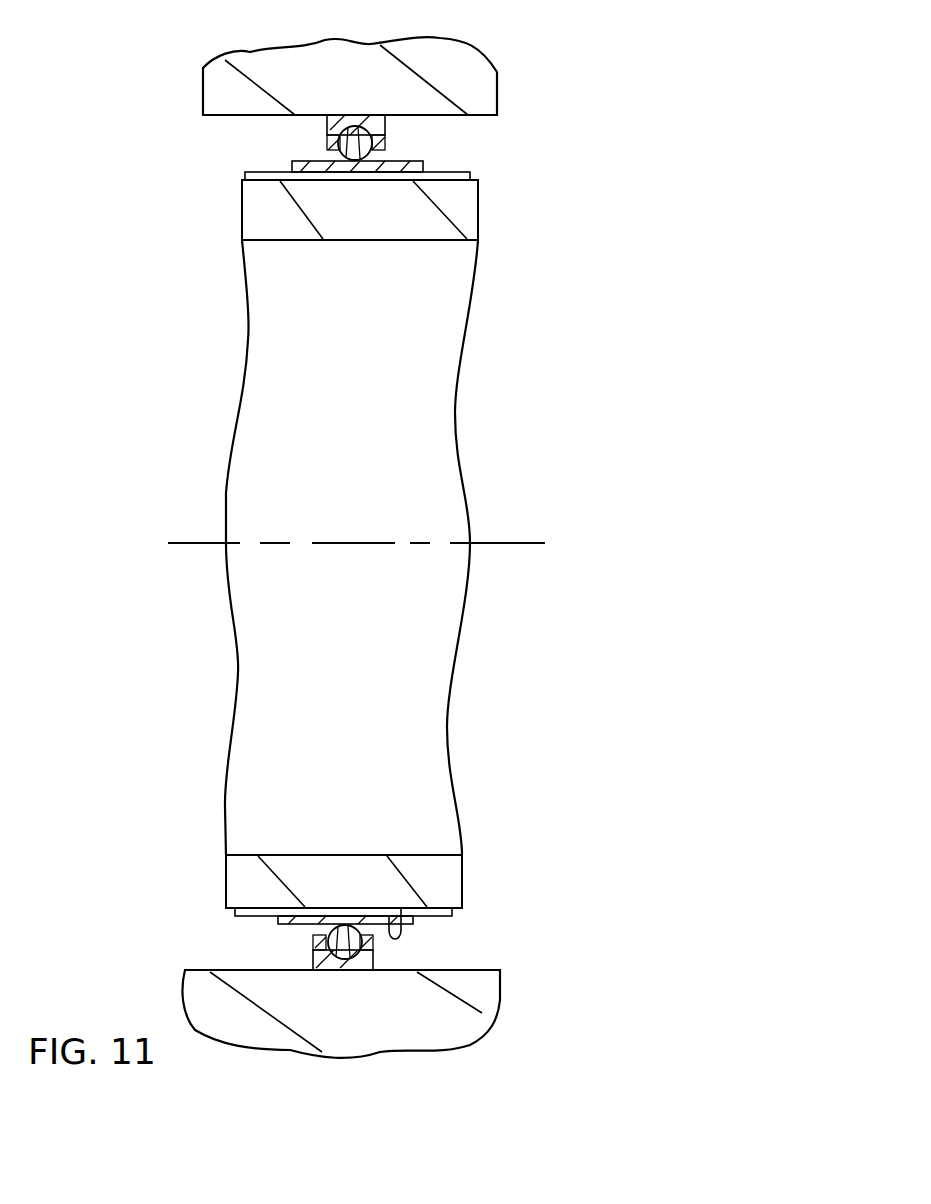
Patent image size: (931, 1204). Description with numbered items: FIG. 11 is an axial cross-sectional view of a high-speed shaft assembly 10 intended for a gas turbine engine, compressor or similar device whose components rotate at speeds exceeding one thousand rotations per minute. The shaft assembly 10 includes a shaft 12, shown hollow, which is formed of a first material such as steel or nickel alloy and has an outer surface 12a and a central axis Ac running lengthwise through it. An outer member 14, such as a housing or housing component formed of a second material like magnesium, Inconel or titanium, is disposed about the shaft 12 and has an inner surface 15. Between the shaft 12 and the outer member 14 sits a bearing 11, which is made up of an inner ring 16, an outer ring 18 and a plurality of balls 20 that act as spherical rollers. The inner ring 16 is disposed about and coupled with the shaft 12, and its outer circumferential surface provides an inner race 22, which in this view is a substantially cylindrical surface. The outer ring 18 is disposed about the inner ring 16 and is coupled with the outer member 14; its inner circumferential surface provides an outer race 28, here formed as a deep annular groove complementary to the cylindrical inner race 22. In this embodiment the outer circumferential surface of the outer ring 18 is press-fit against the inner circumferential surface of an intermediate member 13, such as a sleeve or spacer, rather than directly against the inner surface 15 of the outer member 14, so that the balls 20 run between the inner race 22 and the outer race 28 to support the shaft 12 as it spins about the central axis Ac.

The high-speed shaft assembly 10 is at (180, 236).
The bearing 11 is at (460, 146).
The shaft 12 is at (248, 351).
The outer surface 12a is at (262, 172).
The intermediate member 13 is at (463, 178).
The outer member 14 is at (486, 79).
The inner surface 15 is at (490, 970).
The inner ring 16 is at (322, 176).
The outer ring 18 is at (340, 100).
The balls 20 is at (364, 156).
The inner race 22 is at (398, 912).
The outer race 28 is at (360, 140).
The central axis Ac is at (530, 543).